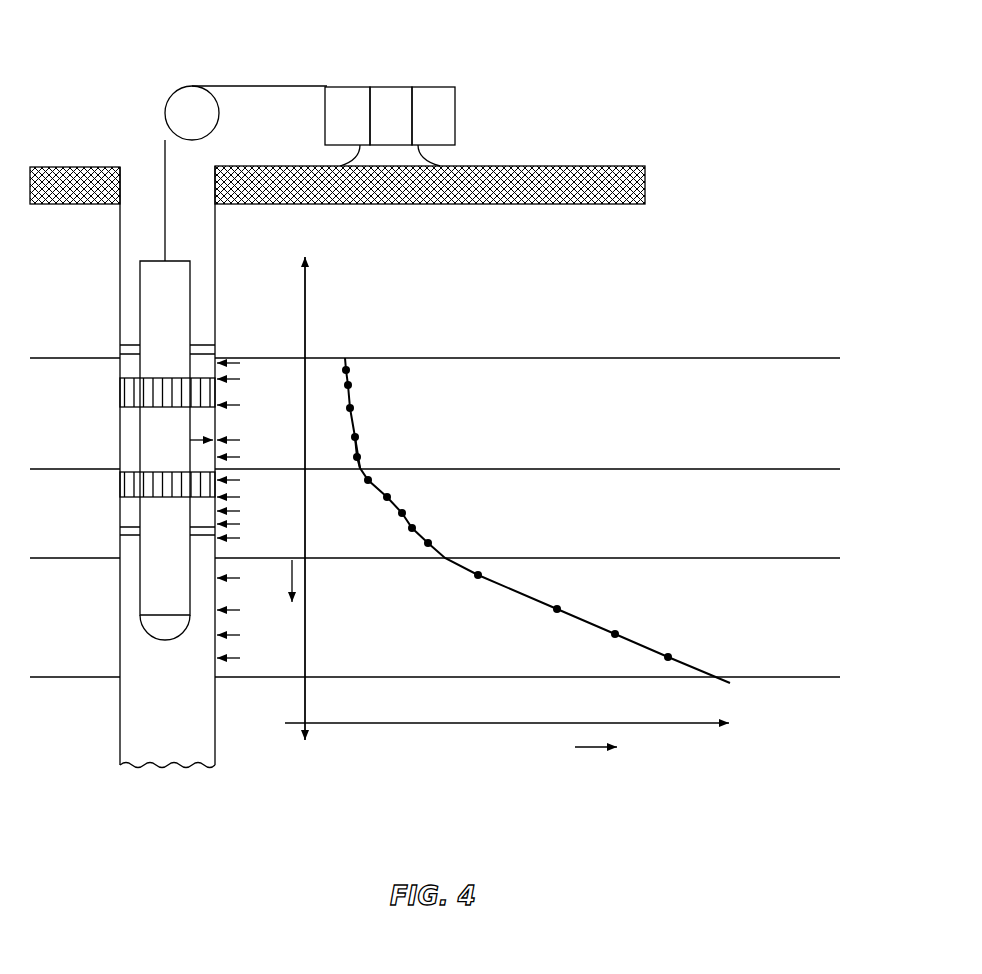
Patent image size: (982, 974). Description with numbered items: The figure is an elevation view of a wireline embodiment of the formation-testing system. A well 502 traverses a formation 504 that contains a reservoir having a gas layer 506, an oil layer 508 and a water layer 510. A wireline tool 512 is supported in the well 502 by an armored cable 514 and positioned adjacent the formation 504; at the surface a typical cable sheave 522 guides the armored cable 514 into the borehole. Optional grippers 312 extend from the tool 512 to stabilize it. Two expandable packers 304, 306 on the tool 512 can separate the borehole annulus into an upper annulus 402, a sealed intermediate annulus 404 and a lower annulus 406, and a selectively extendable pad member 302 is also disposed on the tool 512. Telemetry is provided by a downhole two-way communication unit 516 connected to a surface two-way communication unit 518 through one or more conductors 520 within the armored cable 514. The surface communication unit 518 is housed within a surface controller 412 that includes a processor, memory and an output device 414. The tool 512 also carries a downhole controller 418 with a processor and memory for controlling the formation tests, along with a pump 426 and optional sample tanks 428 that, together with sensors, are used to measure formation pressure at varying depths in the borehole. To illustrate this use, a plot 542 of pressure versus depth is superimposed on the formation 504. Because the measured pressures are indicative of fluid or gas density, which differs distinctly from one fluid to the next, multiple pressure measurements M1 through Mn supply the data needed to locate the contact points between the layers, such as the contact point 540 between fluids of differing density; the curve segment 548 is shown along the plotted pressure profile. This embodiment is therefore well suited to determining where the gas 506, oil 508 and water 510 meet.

The well 502 is at (135, 168).
The cable sheave 522 is at (190, 111).
The conductors 520 is at (250, 86).
The armored cable 514 is at (165, 213).
The surface two-way communication unit 518 is at (345, 87).
The surface controller 412 is at (390, 87).
The output device 414 is at (435, 87).
The upper annulus 402 is at (130, 292).
The wireline tool 512 is at (140, 325).
The downhole two-way communication unit 516 is at (163, 281).
The sample tanks 428 is at (163, 312).
The grippers 312 is at (200, 345).
The downhole controller 418 is at (198, 375).
The expandable packer 304 is at (120, 395).
The extendable pad member 302 is at (195, 437).
The sealed intermediate annulus 404 is at (200, 460).
The pump 426 is at (157, 432).
The expandable packer 306 is at (120, 468).
The lower annulus 406 is at (140, 695).
The formation 504 is at (750, 334).
The gas layer 506 is at (750, 424).
The oil layer 508 is at (750, 527).
The water layer 510 is at (750, 627).
The pressure curve segment 548 is at (360, 468).
The contact point 540 is at (447, 558).
The plot of pressure versus depth 542 is at (336, 760).
The first pressure measurement M1 is at (240, 363).
The nth pressure measurement Mn is at (240, 658).